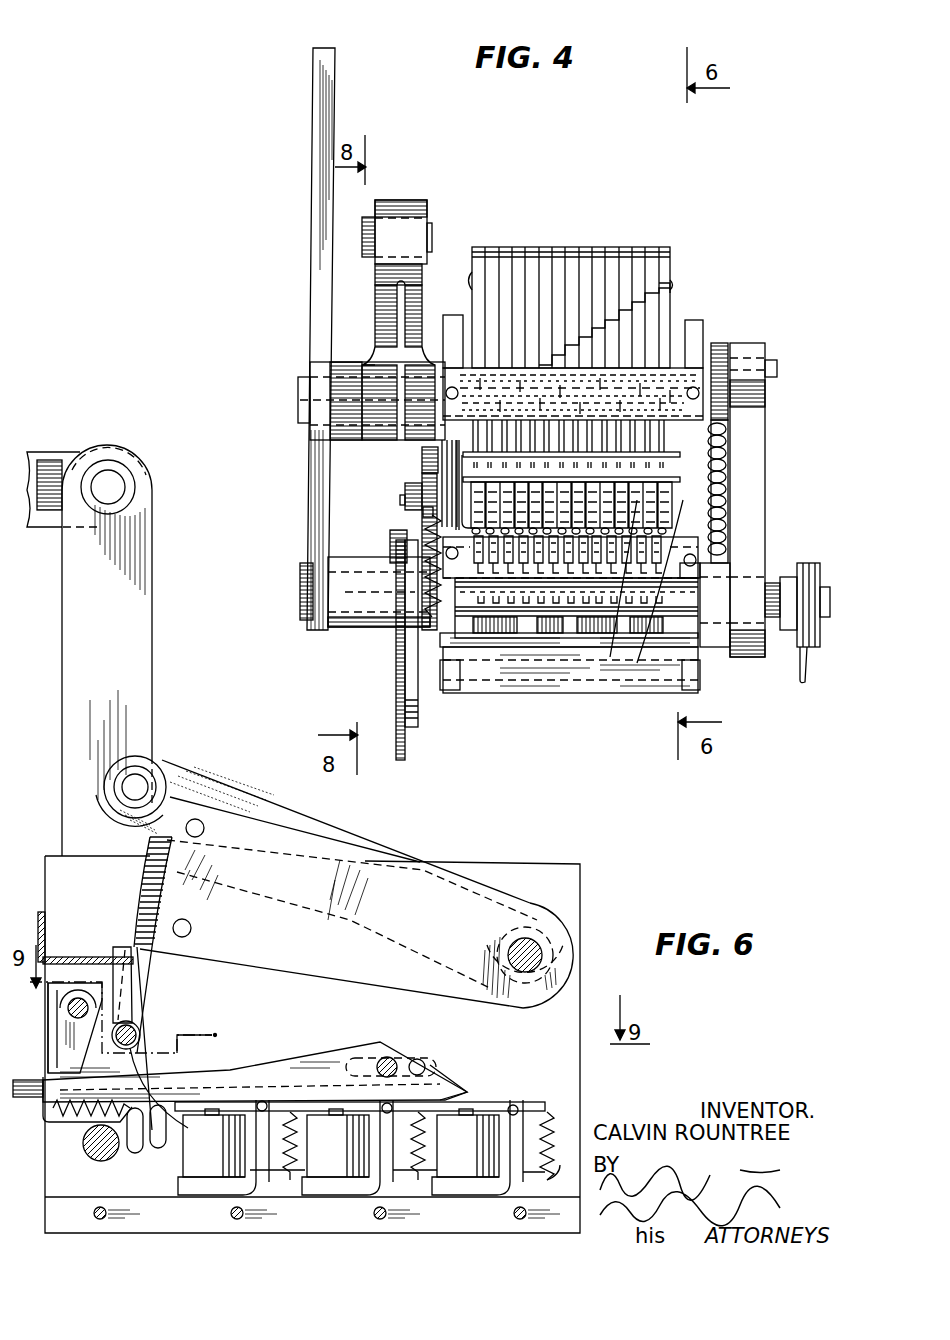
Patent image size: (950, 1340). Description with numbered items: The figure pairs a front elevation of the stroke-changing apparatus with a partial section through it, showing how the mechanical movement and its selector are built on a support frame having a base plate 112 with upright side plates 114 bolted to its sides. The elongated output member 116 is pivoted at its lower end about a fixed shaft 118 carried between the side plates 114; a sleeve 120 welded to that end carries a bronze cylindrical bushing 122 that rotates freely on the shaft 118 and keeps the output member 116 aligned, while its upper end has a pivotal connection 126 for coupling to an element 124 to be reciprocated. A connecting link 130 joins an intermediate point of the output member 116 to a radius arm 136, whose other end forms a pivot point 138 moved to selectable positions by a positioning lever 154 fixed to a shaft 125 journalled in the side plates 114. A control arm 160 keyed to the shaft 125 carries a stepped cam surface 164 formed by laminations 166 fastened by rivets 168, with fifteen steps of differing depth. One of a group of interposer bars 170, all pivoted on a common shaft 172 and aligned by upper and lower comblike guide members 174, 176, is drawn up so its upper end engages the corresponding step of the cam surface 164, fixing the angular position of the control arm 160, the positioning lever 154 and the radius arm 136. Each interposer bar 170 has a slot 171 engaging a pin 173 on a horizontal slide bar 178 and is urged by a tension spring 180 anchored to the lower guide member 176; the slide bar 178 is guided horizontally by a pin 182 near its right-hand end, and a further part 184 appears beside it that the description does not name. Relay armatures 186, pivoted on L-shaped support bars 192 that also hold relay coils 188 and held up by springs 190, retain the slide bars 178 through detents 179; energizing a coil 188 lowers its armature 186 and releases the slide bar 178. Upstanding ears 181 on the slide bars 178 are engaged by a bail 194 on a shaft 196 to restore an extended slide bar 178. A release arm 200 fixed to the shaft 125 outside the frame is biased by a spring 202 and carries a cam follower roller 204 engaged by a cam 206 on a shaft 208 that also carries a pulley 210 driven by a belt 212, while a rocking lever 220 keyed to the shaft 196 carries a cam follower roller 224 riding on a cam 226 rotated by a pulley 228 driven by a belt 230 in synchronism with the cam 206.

In FIG. 4, the base plate 112 is at (580, 693).
In FIG. 6, the base plate 112 is at (48, 1213).
In FIG. 4, the side plates 114 is at (458, 688).
In FIG. 6, the side plates 114 is at (582, 884).
In FIG. 4, the output member 116 is at (318, 92).
In FIG. 6, the output member 116 is at (132, 620).
In FIG. 4, the fixed shaft 118 is at (533, 605).
In FIG. 6, the fixed shaft 118 is at (101, 1162).
In FIG. 4, the sleeve 120 is at (368, 640).
In FIG. 4, the cylindrical bushing 122 is at (336, 640).
In FIG. 6, the element to be reciprocated 124 is at (52, 452).
In FIG. 6, the shaft 125 is at (552, 952).
In FIG. 6, the pivotal connection 126 is at (115, 488).
In FIG. 4, the connecting link 130 is at (340, 435).
In FIG. 4, the radius arm 136 is at (376, 318).
In FIG. 4, the pivot point 138 is at (372, 210).
In FIG. 6, the pivot point 138 is at (148, 770).
In FIG. 4, the positioning lever 154 is at (415, 300).
In FIG. 6, the positioning lever 154 is at (200, 772).
In FIG. 4, the control arm 160 is at (572, 243).
In FIG. 6, the control arm 160 is at (330, 833).
In FIG. 4, the stepped cam surface 164 is at (652, 322).
In FIG. 6, the stepped cam surface 164 is at (147, 882).
In FIG. 4, the laminations 166 is at (649, 247).
In FIG. 4, the rivets 168 is at (672, 290).
In FIG. 6, the rivets 168 is at (190, 925).
In FIG. 4, the interposer bars 170 is at (667, 530).
In FIG. 6, the interposer bars 170 is at (128, 983).
In FIG. 6, the longitudinal slot 171 is at (170, 1118).
In FIG. 6, the common shaft 172 is at (136, 1027).
In FIG. 6, the pin 173 is at (138, 1150).
In FIG. 4, the upper comblike guide member 174 is at (697, 412).
In FIG. 6, the upper comblike guide member 174 is at (70, 962).
In FIG. 4, the lower comblike guide member 176 is at (700, 568).
In FIG. 6, the lower comblike guide member 176 is at (55, 1122).
In FIG. 4, the slide bar 178 is at (640, 658).
In FIG. 6, the slide bar 178 is at (430, 1062).
In FIG. 6, the detent 179 is at (440, 1098).
In FIG. 6, the tension spring 180 is at (80, 1118).
In FIG. 6, the upstanding ear 181 is at (162, 1057).
In FIG. 6, the pin 182 is at (392, 1058).
In FIG. 6, the pin 184 is at (418, 1060).
In FIG. 6, the relay armature 186 is at (492, 1104).
In FIG. 4, the relay coil 188 is at (541, 600).
In FIG. 6, the relay coil 188 is at (345, 1160).
In FIG. 6, the spring 190 is at (547, 1176).
In FIG. 6, the L-shaped support bar 192 is at (500, 1198).
In FIG. 4, the bail 194 is at (682, 507).
In FIG. 6, the bail 194 is at (62, 1052).
In FIG. 4, the shaft 196 is at (420, 458).
In FIG. 6, the shaft 196 is at (68, 1010).
In FIG. 4, the release arm 200 is at (722, 343).
In FIG. 4, the spring 202 is at (724, 470).
In FIG. 4, the cam follower roller 204 is at (765, 347).
In FIG. 4, the cam 206 is at (762, 400).
In FIG. 4, the shaft 208 is at (773, 633).
In FIG. 4, the pulley 210 is at (810, 566).
In FIG. 4, the belt 212 is at (805, 683).
In FIG. 4, the rocking lever 220 is at (422, 510).
In FIG. 4, the cam follower roller 224 is at (404, 489).
In FIG. 4, the cam 226 is at (419, 716).
In FIG. 4, the pulley 228 is at (390, 543).
In FIG. 4, the belt 230 is at (396, 703).